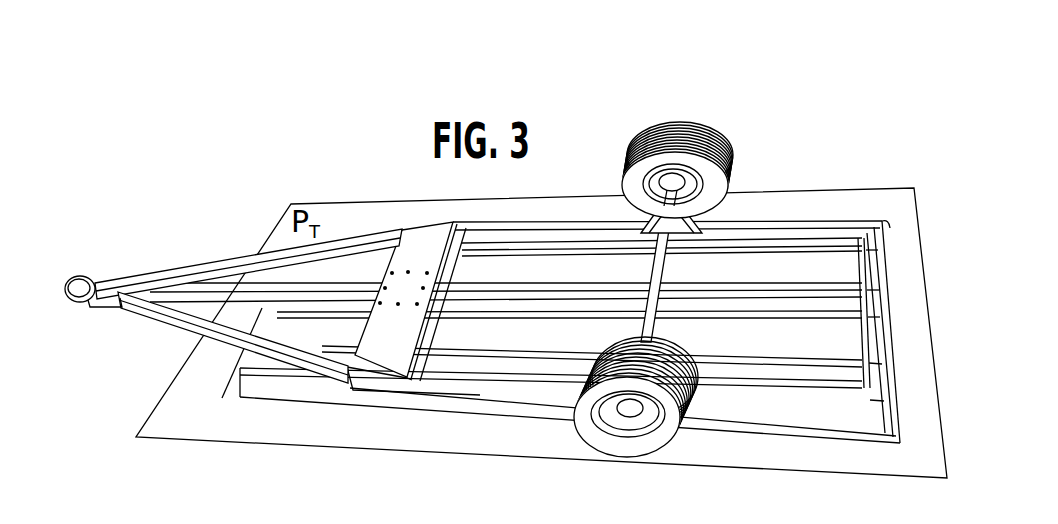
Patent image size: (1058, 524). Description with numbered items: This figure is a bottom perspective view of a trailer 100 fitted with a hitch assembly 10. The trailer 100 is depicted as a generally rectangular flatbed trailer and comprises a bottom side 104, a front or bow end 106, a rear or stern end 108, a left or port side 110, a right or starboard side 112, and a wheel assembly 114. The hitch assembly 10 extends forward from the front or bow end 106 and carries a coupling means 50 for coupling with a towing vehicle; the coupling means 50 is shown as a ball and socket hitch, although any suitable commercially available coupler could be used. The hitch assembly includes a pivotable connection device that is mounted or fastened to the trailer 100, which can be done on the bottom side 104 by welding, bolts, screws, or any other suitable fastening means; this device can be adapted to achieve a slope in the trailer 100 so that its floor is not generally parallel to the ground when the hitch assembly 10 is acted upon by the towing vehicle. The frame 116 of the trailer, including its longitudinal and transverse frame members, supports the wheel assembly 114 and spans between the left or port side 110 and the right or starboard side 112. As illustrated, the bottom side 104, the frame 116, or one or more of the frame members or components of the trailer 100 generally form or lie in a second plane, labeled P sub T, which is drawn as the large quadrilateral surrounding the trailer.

The hitch assembly 10 is at (233, 275).
The coupling means 50 is at (76, 280).
The trailer 100 is at (537, 305).
The bottom side 104 is at (782, 273).
The front or bow end 106 is at (240, 368).
The rear or stern end 108 is at (890, 310).
The left or port side 110 is at (535, 227).
The right or starboard side 112 is at (523, 418).
The wheel assembly 114 is at (710, 113).
The frame 116 is at (509, 297).